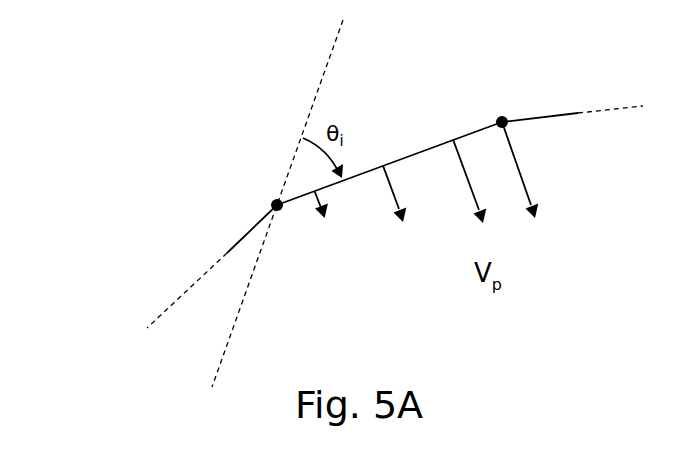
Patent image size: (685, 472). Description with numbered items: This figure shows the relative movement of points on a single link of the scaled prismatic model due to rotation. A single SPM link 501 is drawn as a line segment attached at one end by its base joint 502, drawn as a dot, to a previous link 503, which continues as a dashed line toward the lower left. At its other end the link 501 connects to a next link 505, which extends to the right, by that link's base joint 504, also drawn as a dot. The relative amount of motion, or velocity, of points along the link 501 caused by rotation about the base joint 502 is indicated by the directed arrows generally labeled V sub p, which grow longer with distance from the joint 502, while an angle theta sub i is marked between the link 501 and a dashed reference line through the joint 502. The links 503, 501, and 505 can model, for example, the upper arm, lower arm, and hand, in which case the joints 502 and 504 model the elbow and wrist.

The SPM link 501 is at (430, 145).
The base joint 502 is at (272, 202).
The previous link 503 is at (226, 252).
The base joint 504 is at (497, 118).
The next link 505 is at (615, 110).